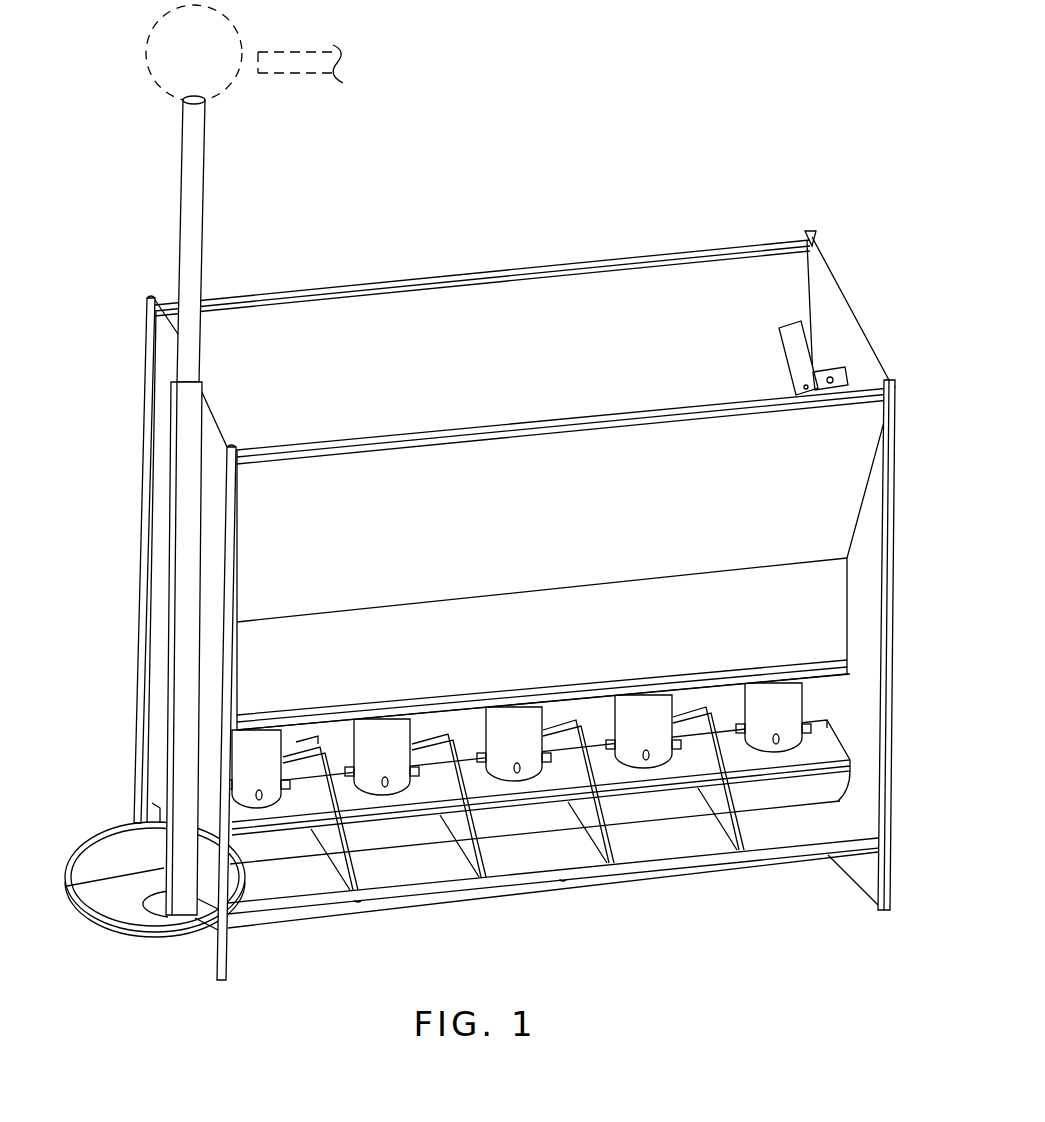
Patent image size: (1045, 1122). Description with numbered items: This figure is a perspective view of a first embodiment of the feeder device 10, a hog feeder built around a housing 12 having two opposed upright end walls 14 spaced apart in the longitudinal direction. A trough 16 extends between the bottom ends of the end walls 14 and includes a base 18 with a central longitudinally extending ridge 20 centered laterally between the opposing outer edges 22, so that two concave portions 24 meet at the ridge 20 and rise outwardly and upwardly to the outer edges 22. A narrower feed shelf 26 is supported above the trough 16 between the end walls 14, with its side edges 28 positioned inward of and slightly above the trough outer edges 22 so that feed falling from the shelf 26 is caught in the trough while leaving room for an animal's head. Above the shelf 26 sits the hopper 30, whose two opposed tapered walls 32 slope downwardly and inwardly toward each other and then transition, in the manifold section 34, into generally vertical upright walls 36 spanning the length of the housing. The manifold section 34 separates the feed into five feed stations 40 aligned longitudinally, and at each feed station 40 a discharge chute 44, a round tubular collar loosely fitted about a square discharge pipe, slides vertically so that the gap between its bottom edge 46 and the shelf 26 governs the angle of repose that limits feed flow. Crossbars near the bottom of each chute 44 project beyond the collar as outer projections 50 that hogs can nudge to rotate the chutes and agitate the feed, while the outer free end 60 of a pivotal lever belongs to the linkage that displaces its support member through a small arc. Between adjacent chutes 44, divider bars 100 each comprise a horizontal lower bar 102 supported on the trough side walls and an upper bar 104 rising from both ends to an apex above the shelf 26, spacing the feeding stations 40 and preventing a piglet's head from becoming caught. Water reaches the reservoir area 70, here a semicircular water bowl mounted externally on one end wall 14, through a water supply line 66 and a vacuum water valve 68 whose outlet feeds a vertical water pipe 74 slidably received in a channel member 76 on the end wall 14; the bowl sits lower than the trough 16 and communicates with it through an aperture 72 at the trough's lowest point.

The feeder device 10 is at (624, 122).
The housing 12 is at (141, 412).
The end wall 14 is at (836, 306).
The trough 16 is at (329, 938).
The base 18 is at (528, 784).
The central ridge 20 is at (540, 834).
The outer edge 22 is at (530, 856).
The concave portion 24 is at (665, 838).
The feed shelf 26 is at (735, 757).
The side edge of shelf 28 is at (795, 778).
The hopper 30 is at (404, 346).
The tapered wall 32 is at (589, 299).
The manifold section 34 is at (258, 659).
The upright wall 36 is at (394, 653).
The feed station 40 is at (265, 978).
The discharge chute 44 is at (742, 727).
The bottom edge 46 is at (770, 736).
The outer projection 50 is at (804, 724).
The outer free end of lever 60 is at (788, 328).
The water supply line 66 is at (300, 76).
The vacuum water valve 68 is at (248, 36).
The reservoir area 70 is at (145, 940).
The aperture 72 is at (198, 917).
The water pipe 74 is at (204, 192).
The channel member 76 is at (181, 460).
The divider bar 100 is at (308, 735).
The lower bar 102 is at (337, 760).
The upper bar 104 is at (323, 832).